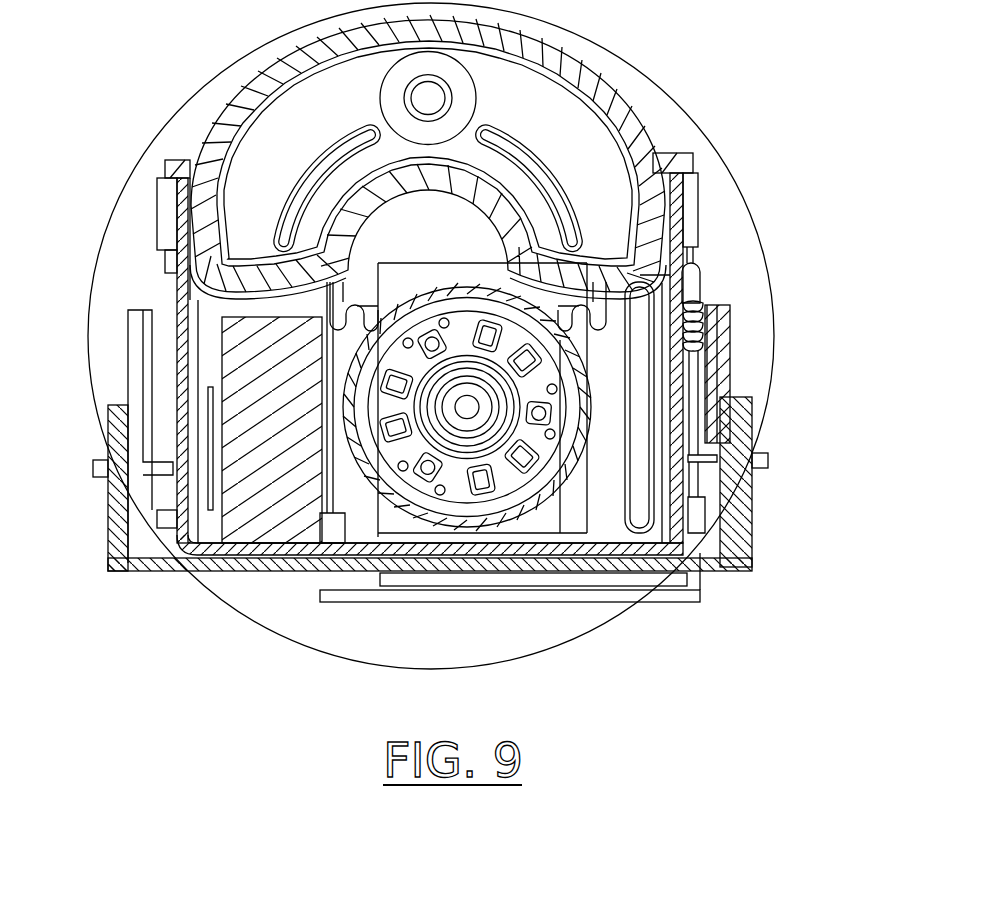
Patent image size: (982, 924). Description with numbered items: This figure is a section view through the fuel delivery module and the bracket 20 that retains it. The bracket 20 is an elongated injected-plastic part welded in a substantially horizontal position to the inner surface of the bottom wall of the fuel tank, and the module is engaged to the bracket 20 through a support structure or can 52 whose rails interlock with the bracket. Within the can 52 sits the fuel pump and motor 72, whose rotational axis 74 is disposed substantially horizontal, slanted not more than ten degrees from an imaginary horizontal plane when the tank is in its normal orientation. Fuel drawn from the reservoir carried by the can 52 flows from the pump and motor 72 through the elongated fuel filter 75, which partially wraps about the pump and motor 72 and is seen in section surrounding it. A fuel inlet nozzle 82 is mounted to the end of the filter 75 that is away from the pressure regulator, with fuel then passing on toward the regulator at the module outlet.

The bracket 20 is at (113, 520).
The can 52 is at (680, 267).
The fuel pump and motor 72 is at (387, 460).
The rotational axis 74 is at (467, 407).
The fuel filter 75 is at (690, 21).
The fuel inlet nozzle 82 is at (433, 98).